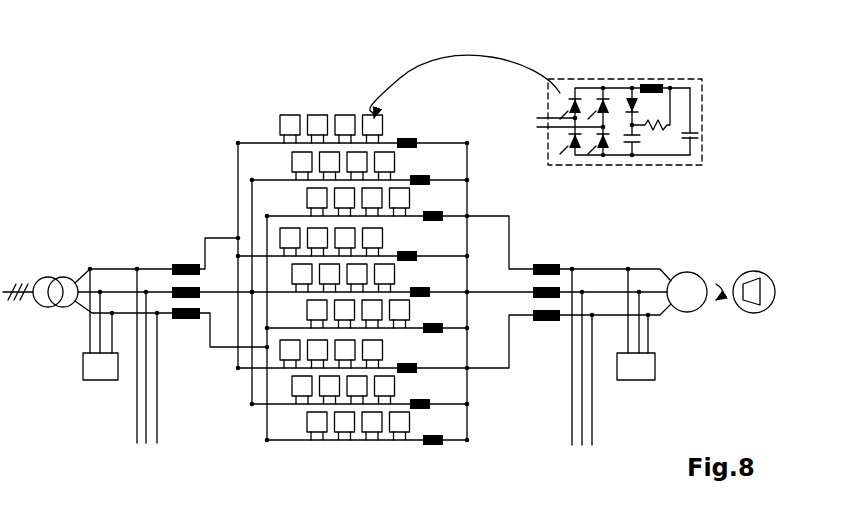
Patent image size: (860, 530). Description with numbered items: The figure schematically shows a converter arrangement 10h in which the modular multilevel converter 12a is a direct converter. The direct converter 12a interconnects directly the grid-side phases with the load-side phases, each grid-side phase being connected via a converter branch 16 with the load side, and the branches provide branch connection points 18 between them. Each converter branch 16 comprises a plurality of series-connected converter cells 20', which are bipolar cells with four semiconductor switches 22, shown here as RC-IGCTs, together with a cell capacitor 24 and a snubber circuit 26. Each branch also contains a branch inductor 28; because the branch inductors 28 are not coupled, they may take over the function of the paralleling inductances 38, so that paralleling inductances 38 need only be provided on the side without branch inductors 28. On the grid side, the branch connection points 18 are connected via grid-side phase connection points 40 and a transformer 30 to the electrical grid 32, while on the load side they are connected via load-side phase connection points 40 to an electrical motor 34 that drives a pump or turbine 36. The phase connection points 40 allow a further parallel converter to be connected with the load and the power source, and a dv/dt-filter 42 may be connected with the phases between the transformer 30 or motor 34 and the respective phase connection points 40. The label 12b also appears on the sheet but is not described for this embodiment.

The converter arrangement 10h is at (714, 86).
The modular multilevel converter 12a is at (142, 187).
The second converter 12b is at (72, 0).
The converter branch 16 is at (276, 125).
The branch connection point 18 is at (237, 237).
The converter cell 20' is at (641, 85).
The semiconductor switches 22 is at (577, 70).
The cell capacitor 24 is at (693, 100).
The snubber circuit 26 is at (665, 61).
The branch inductor 28 is at (435, 211).
The transformer 30 is at (58, 318).
The electrical grid 32 is at (21, 272).
The electrical motor 34 is at (690, 314).
The pump or turbine 36 is at (755, 314).
The inductances 38 is at (185, 264).
The phase connection points 40 is at (100, 226).
The dv/dt-filter 42 is at (98, 381).